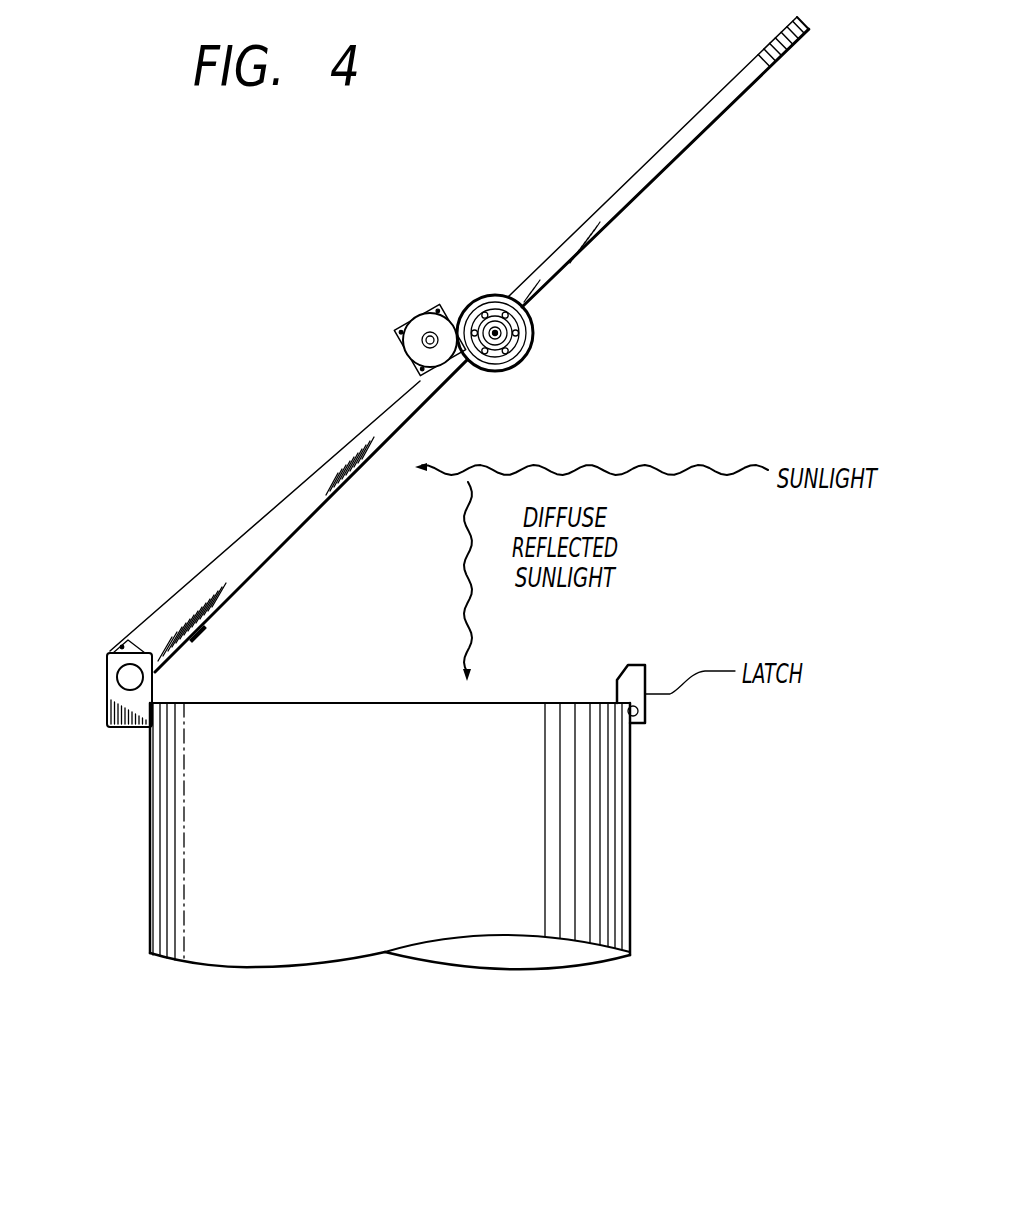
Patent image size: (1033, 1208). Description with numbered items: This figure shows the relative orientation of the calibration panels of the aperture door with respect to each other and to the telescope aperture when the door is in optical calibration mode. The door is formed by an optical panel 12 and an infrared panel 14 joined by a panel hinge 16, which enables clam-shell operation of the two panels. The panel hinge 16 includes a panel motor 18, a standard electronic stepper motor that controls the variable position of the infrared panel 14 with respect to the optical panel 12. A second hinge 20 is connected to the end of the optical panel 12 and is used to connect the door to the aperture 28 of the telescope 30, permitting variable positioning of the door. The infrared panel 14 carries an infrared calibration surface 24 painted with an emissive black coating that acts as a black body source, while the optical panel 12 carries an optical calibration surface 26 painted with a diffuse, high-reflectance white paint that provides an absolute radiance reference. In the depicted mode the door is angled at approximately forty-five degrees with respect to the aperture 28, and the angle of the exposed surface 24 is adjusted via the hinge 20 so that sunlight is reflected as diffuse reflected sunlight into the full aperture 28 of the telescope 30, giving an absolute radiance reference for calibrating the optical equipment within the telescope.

The optical panel 12 is at (221, 572).
The infrared panel 14 is at (768, 100).
The panel hinge 16 is at (550, 335).
The panel motor 18 is at (397, 332).
The second hinge 20 is at (86, 656).
The infrared calibration surface 24 is at (652, 148).
The optical calibration surface 26 is at (322, 513).
The aperture 28 is at (572, 703).
The telescope 30 is at (515, 952).